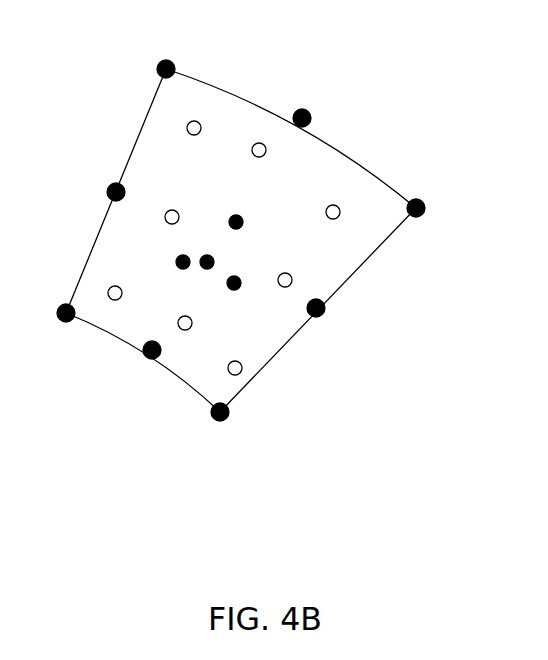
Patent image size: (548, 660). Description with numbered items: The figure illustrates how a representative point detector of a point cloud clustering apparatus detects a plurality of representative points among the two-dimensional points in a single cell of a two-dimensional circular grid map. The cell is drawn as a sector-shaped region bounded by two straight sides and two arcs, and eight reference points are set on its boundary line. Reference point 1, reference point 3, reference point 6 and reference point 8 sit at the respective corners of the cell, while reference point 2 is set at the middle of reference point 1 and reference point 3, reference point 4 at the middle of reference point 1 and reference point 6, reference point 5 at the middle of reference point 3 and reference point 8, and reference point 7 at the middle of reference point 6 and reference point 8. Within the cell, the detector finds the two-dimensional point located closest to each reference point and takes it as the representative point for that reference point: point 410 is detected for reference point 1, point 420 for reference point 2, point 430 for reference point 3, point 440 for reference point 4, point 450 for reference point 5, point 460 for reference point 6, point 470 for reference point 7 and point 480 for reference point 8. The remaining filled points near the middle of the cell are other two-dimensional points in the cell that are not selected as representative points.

The reference point 1 is at (155, 46).
The reference point 2 is at (315, 97).
The reference point 3 is at (439, 205).
The reference point 4 is at (92, 183).
The reference point 5 is at (336, 324).
The reference point 6 is at (46, 326).
The reference point 7 is at (140, 368).
The reference point 8 is at (232, 428).
The point 410 is at (194, 120).
The point 420 is at (260, 142).
The point 430 is at (334, 205).
The point 440 is at (172, 210).
The point 450 is at (292, 280).
The point 460 is at (115, 286).
The point 470 is at (178, 323).
The point 480 is at (241, 372).